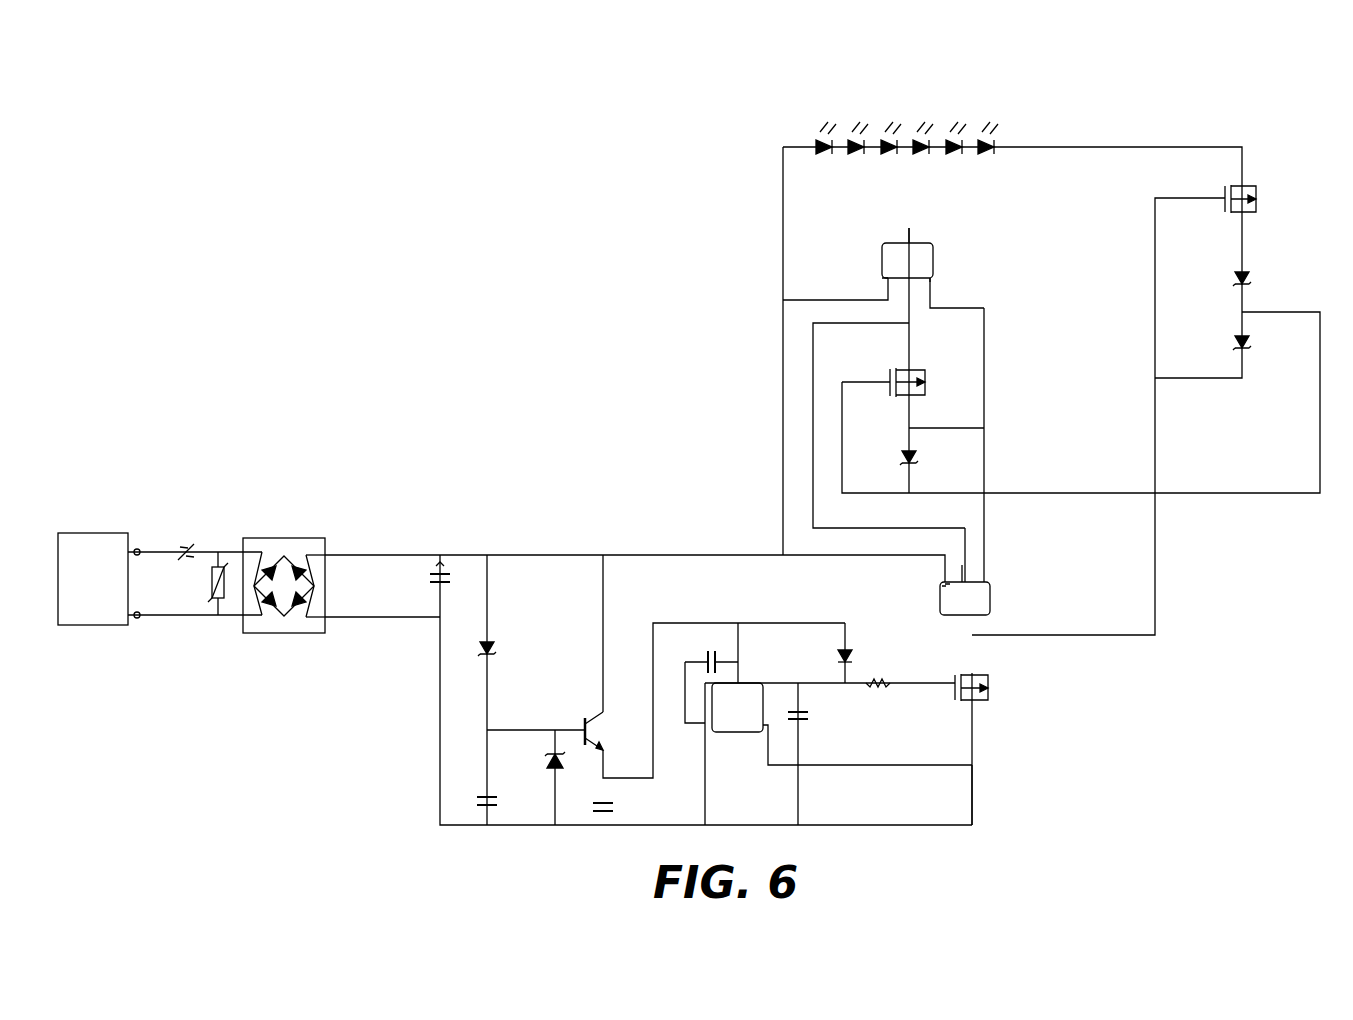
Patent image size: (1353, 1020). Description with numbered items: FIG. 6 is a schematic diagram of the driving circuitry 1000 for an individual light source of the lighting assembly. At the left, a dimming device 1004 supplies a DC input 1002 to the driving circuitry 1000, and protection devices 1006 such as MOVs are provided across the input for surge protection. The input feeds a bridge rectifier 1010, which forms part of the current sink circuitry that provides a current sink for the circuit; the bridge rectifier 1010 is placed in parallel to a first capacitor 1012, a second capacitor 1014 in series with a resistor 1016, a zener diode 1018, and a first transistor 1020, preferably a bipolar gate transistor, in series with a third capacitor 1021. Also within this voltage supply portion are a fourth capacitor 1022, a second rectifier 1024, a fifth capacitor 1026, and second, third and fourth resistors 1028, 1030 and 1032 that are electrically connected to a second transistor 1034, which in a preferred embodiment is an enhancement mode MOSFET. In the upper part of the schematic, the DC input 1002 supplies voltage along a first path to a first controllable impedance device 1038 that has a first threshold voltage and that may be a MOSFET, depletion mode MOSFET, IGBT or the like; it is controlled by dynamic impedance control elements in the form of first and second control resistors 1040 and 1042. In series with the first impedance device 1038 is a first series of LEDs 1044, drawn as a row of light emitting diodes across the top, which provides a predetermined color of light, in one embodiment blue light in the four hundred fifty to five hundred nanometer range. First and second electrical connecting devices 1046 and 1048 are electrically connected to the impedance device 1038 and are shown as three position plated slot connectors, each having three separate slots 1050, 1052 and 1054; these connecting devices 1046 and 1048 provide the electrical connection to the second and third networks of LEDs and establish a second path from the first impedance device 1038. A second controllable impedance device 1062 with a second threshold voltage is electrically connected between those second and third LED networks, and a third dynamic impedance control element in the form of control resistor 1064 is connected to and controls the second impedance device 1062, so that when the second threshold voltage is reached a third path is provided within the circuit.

The driving circuitry 1000 is at (490, 277).
The DC input 1002 is at (143, 540).
The dimming device 1004 is at (97, 627).
The protection devices 1006 is at (220, 545).
The bridge rectifier 1010 is at (304, 540).
The first capacitor 1012 is at (430, 580).
The second capacitor 1014 is at (480, 797).
The resistor 1016 is at (490, 652).
The zener diode 1018 is at (553, 762).
The first transistor 1020 is at (591, 720).
The third capacitor 1021 is at (612, 806).
The fourth capacitor 1022 is at (703, 661).
The second rectifier 1024 is at (752, 684).
The fifth capacitor 1026 is at (803, 718).
The second resistor 1028 is at (848, 656).
The third resistor 1030 is at (895, 680).
The fourth resistor 1032 is at (974, 800).
The second transistor 1034 is at (986, 698).
The first controllable impedance device 1038 is at (1262, 190).
The first control resistor 1040 is at (1247, 286).
The second control resistor 1042 is at (1247, 352).
The first series of LEDs 1044 is at (944, 99).
The first electrical connecting device 1046 is at (934, 249).
The second electrical connecting device 1048 is at (990, 603).
The slot 1050 is at (876, 282).
The slot 1052 is at (962, 580).
The slot 1054 is at (935, 276).
The second controllable impedance device 1062 is at (926, 369).
The control resistor 1064 is at (904, 462).